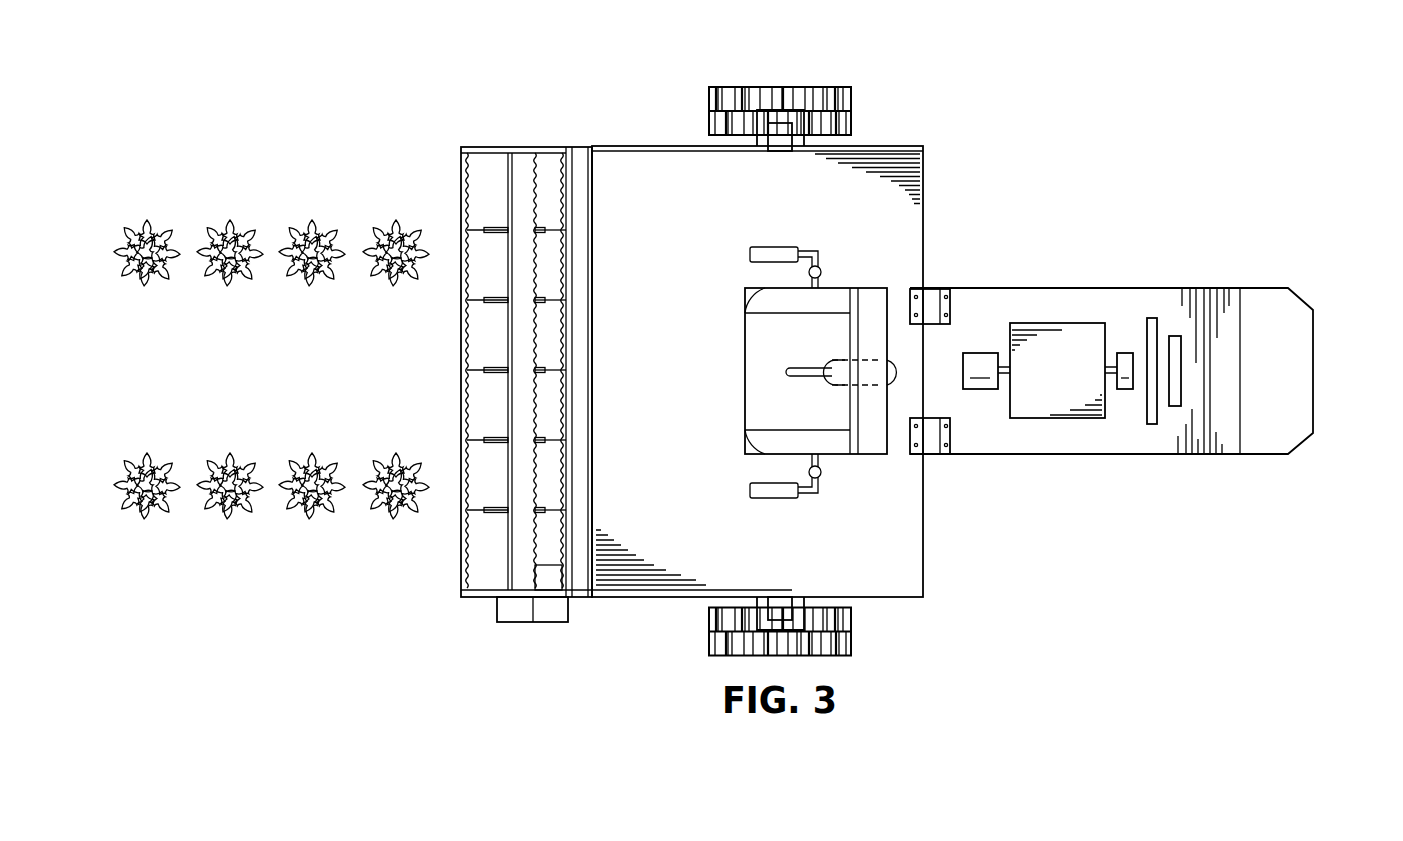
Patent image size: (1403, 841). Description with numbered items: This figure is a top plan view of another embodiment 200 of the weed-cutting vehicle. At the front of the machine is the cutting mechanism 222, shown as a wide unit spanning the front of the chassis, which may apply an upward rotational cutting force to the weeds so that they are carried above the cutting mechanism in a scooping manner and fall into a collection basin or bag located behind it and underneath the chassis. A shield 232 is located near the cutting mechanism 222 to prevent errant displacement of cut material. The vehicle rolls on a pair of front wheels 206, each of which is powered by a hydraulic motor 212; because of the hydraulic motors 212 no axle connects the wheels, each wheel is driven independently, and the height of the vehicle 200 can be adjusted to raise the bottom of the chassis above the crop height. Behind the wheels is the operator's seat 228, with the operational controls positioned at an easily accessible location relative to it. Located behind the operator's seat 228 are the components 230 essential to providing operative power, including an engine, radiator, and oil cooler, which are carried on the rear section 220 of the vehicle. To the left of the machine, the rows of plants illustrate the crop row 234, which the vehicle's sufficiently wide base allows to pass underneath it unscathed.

The embodiment 200 is at (1098, 111).
The front wheels 206 is at (709, 100).
The hydraulic motor 212 is at (763, 140).
The rear platform 220 is at (1305, 370).
The cutting mechanism 222 is at (465, 337).
The operator's seat 228 is at (877, 298).
The components 230 is at (1063, 316).
The shield 232 is at (500, 612).
The crop row 234 is at (224, 206).